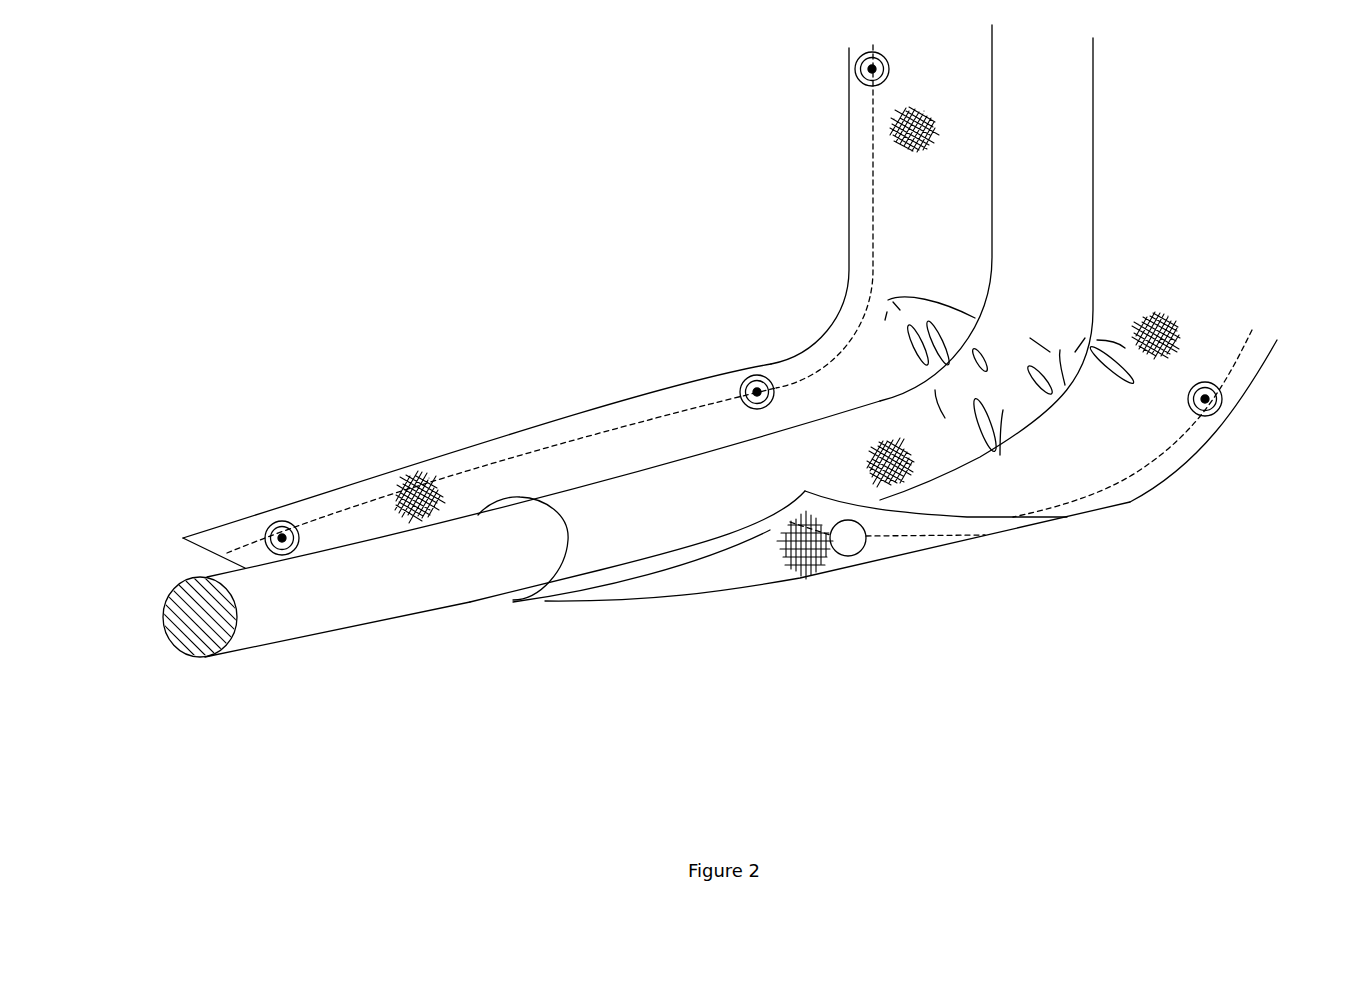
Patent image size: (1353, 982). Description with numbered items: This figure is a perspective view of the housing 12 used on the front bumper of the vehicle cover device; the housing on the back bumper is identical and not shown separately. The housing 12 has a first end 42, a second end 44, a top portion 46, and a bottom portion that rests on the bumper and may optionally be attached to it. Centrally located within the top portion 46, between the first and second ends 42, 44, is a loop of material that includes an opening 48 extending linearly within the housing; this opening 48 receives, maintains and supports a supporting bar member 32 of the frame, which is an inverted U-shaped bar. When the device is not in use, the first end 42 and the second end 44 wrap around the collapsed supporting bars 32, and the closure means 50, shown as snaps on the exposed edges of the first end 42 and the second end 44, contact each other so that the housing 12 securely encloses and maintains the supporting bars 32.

The housing 12 is at (652, 613).
The supporting bar member 32 is at (322, 622).
The first end 42 is at (1153, 433).
The second end 44 is at (857, 222).
The top portion 46 is at (598, 445).
The opening 48 is at (512, 510).
The closure means 50 is at (755, 390).